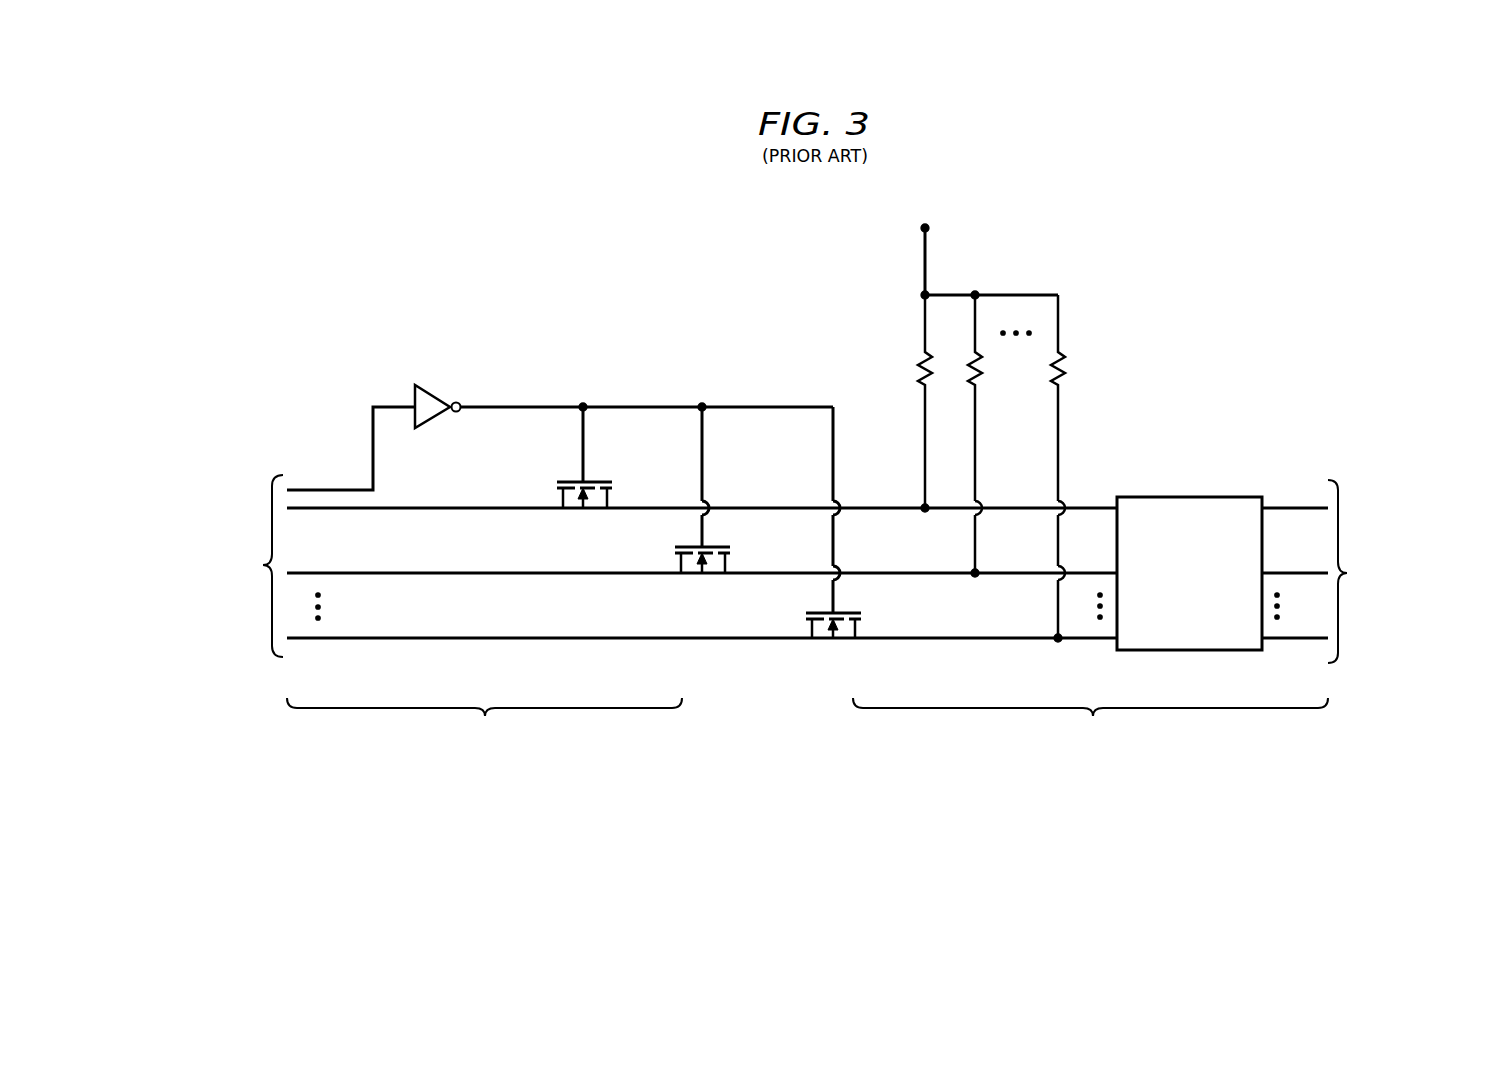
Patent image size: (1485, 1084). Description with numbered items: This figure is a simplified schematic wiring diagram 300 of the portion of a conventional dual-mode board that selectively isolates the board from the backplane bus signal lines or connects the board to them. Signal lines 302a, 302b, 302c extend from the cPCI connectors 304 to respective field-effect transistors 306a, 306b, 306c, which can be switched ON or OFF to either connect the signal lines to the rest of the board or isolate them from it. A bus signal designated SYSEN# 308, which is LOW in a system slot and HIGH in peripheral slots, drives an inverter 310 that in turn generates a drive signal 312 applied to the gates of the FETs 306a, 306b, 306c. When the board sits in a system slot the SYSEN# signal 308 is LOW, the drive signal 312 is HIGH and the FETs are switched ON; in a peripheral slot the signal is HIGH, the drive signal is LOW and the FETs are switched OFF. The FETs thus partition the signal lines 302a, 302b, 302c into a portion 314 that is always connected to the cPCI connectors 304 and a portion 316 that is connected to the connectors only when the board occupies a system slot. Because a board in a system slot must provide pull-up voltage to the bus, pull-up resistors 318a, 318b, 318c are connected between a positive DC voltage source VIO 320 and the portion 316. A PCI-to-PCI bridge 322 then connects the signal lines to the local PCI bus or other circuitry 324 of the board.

The simplified schematic wiring diagram 300 is at (352, 168).
The signal line 302a is at (365, 512).
The signal line 302b is at (392, 577).
The signal line 302c is at (415, 642).
The cPCI connectors 304 is at (196, 566).
The field-effect transistor 306a is at (605, 482).
The field-effect transistor 306b is at (723, 547).
The field-effect transistor 306c is at (852, 613).
The SYSEN# bus signal 308 is at (322, 456).
The inverter 310 is at (435, 385).
The drive signal 312 is at (532, 407).
The portion of the signal lines always connected to the cPCI connectors 314 is at (484, 723).
The portion of the signal lines connected only in a system slot 316 is at (1090, 723).
The pull-up resistor 318a is at (916, 362).
The pull-up resistor 318b is at (982, 376).
The pull-up resistor 318c is at (1066, 355).
The positive DC voltage source (VIO) 320 is at (930, 228).
The PCI-to-PCI bridge 322 is at (1222, 497).
The local PCI bus 324 is at (1400, 606).